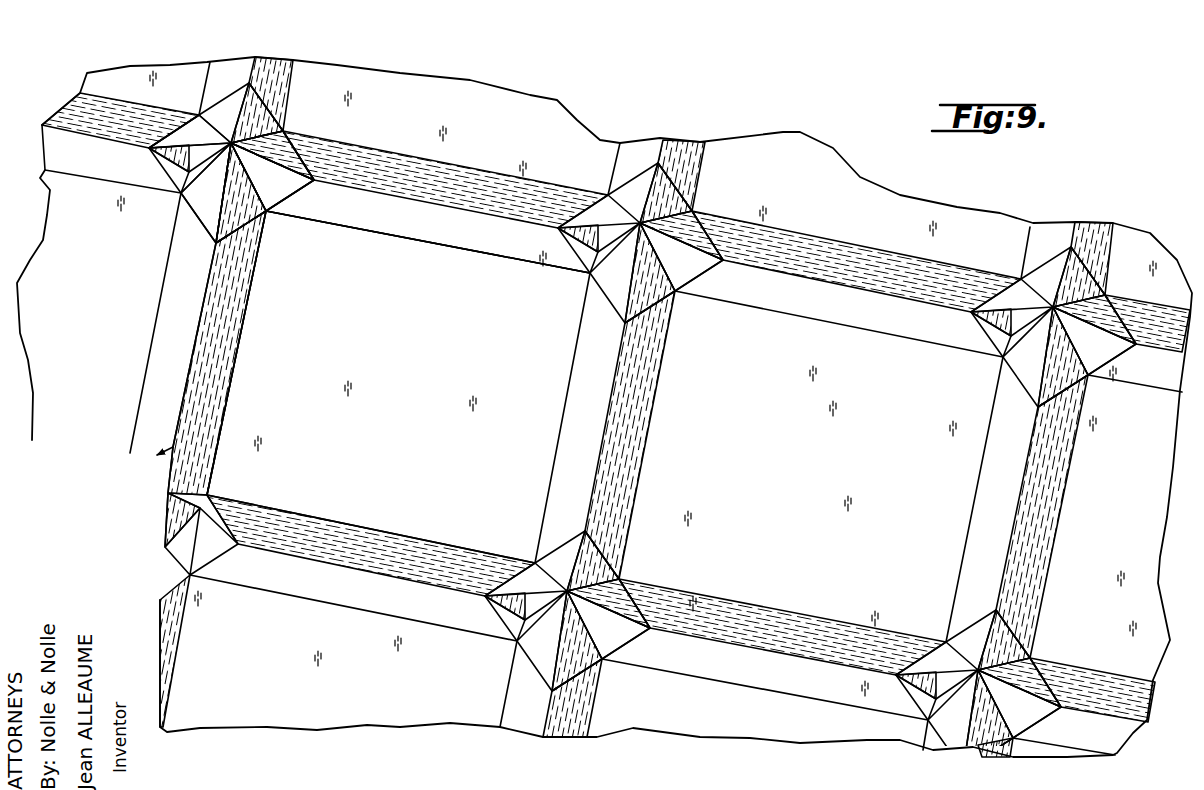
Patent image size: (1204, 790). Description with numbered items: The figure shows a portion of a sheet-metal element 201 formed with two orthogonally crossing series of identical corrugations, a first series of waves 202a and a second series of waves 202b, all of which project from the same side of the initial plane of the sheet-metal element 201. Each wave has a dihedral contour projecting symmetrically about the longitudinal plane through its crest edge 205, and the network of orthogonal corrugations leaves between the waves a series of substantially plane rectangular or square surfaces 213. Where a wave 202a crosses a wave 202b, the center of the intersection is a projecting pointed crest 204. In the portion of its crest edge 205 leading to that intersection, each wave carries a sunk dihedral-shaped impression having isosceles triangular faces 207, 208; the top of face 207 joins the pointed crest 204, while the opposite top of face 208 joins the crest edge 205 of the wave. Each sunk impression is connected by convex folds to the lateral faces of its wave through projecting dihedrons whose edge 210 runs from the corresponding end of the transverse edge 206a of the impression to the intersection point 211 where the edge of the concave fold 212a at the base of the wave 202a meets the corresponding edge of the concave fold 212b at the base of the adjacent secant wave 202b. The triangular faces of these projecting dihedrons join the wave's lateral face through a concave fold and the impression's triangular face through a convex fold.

The sheet-metal element 201 is at (127, 400).
The wave of first series of corrugations 202a is at (203, 420).
The wave of second series of corrugations 202b is at (503, 247).
The projecting pointed crest 204 is at (207, 150).
The crest edge 205 is at (190, 375).
The transverse edge of impression dihedron 206a is at (227, 203).
The triangular face of impression dihedron 207 is at (293, 174).
The triangular face of impression dihedron 208 is at (232, 214).
The edge of projecting dihedron 210 is at (268, 218).
The intersection point of concave fold edges 211 is at (270, 211).
The concave fold at base of wave 202a 212a is at (240, 345).
The concave fold at base of wave 202b 212b is at (422, 243).
The plane rectangular or square surface 213 is at (398, 387).